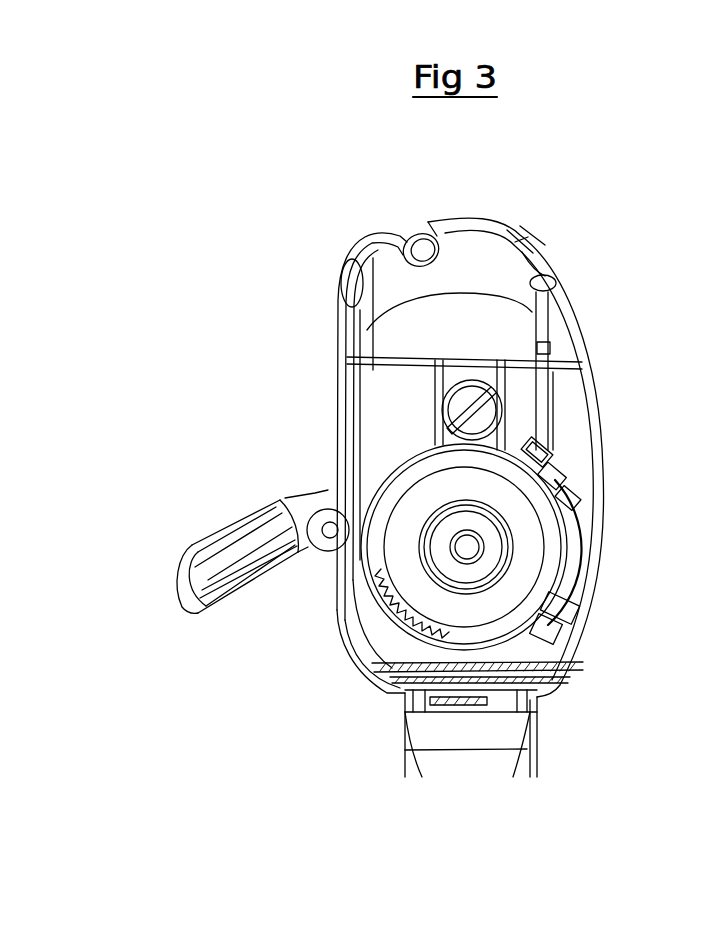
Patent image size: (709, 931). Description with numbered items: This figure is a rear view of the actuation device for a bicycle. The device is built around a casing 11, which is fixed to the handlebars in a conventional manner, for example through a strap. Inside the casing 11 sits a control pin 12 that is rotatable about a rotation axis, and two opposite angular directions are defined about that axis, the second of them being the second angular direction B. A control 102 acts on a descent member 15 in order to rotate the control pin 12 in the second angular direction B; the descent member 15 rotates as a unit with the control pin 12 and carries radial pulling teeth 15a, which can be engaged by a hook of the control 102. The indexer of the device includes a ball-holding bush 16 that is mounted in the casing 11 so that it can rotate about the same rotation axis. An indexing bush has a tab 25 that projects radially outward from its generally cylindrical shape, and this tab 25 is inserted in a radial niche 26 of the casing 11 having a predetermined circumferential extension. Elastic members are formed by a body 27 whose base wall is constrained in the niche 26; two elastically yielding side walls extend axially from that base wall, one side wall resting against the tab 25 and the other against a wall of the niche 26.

The casing 11 is at (478, 263).
The control pin 12 is at (442, 528).
The descent member 15 is at (430, 627).
The radial pulling teeth 15a is at (428, 643).
The ball-holding bush 16 is at (495, 625).
The tab 25 is at (553, 483).
The radial niche 26 is at (570, 502).
The body 27 is at (533, 453).
The control 102 is at (262, 530).
The second angular direction B is at (229, 629).